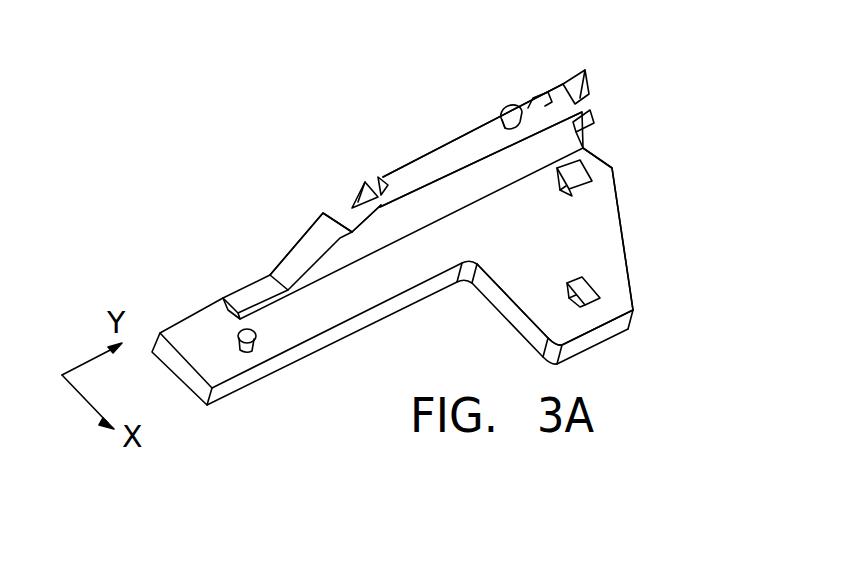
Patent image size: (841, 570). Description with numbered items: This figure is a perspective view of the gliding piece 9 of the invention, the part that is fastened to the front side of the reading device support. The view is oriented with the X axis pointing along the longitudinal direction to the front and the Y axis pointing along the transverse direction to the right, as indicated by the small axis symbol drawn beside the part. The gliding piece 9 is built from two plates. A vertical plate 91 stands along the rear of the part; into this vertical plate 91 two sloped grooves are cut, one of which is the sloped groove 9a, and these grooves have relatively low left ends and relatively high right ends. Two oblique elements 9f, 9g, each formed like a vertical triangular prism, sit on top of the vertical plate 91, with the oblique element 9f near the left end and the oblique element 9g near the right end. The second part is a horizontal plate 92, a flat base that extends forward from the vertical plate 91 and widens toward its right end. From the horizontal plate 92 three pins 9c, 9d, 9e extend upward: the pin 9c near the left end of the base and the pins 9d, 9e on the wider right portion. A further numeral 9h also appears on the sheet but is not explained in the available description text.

The gliding piece 9 is at (270, 238).
The vertical plate 91 is at (447, 187).
The horizontal plate 92 is at (593, 220).
The pin 9c is at (250, 340).
The pin 9d is at (593, 291).
The pin 9e is at (580, 177).
The oblique element 9f is at (350, 210).
The oblique element 9g is at (590, 81).
The sloped groove 9a is at (132, 558).
The hole 9h is at (265, 550).